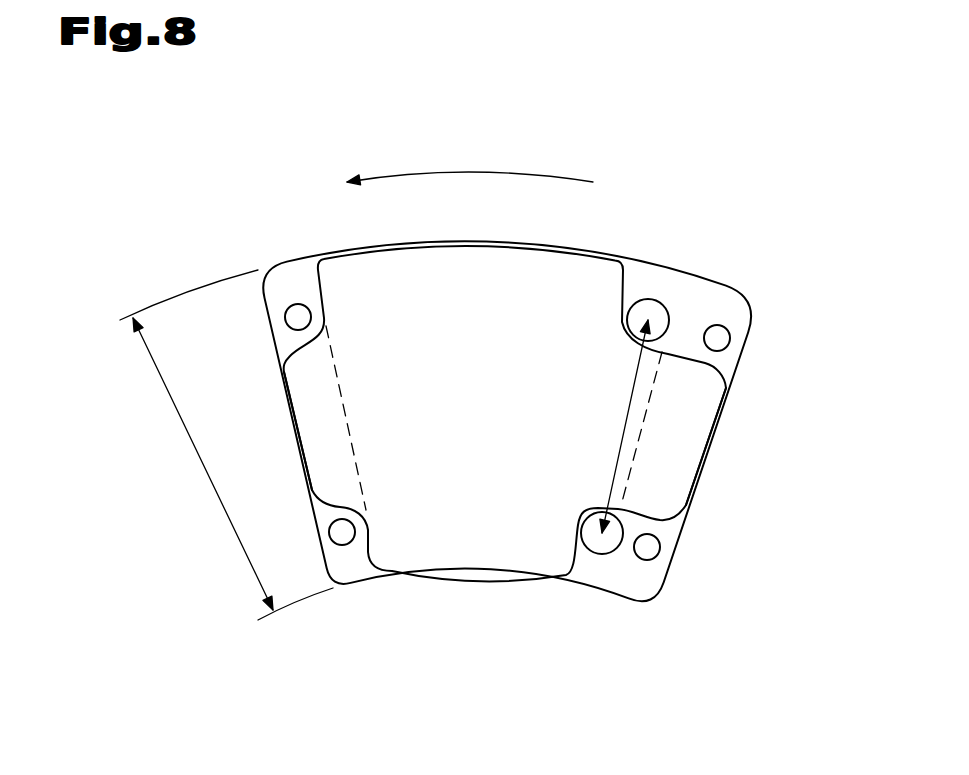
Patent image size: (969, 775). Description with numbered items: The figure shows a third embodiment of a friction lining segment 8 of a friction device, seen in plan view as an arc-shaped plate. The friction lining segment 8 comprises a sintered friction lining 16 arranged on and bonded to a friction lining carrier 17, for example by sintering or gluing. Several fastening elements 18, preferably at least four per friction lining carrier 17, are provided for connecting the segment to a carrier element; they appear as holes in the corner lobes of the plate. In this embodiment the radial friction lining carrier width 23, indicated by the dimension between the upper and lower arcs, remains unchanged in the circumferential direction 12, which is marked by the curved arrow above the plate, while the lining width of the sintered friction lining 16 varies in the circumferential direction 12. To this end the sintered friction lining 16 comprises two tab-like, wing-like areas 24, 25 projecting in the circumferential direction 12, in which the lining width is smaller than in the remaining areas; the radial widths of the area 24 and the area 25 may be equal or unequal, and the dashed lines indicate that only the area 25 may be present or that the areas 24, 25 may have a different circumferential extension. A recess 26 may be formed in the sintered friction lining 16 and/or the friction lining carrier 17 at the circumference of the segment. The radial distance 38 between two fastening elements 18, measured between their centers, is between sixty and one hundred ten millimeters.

The friction lining segment 8 is at (504, 400).
The circumferential direction 12 is at (468, 172).
The sintered friction lining 16 is at (523, 412).
The friction lining carrier 17 is at (730, 283).
The fastening elements 18 is at (292, 302).
The radial friction lining carrier width 23 is at (202, 465).
The tab-like area 24 is at (313, 413).
The tab-like area 25 is at (675, 457).
The recess 26 is at (365, 553).
The radial distance 38 is at (623, 432).